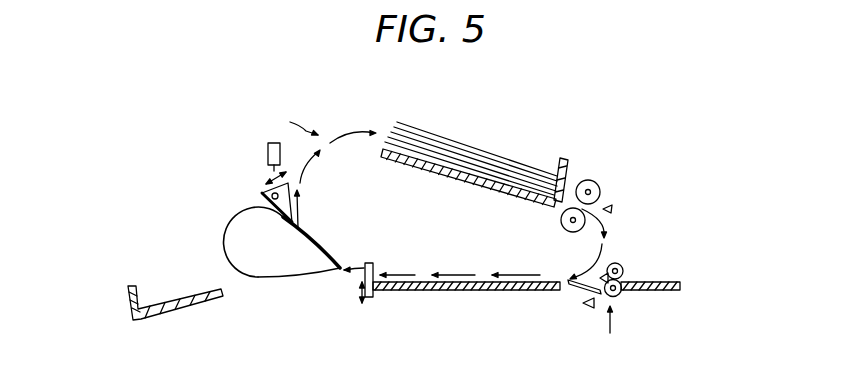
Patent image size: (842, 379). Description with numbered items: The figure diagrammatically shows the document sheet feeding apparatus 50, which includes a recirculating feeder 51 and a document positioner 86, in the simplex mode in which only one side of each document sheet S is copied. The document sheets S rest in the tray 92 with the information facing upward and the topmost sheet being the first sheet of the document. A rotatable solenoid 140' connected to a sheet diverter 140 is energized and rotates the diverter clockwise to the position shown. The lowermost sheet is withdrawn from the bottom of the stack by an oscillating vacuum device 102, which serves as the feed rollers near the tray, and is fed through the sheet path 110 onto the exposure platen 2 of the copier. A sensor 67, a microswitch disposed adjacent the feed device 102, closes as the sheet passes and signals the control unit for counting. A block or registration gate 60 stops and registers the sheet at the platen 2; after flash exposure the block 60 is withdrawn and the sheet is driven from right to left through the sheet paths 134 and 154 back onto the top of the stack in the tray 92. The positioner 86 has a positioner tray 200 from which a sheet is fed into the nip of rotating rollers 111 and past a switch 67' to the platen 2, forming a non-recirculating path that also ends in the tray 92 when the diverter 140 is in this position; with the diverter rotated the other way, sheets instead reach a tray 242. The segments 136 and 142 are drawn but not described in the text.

The exposure platen 2 is at (509, 292).
The document sheet feeding apparatus 50 is at (288, 123).
The recirculating feeder 51 is at (424, 213).
The block or registration gate 60 is at (374, 266).
The sensor 67 is at (625, 206).
The switch 67' is at (626, 261).
The document positioner 86 is at (600, 327).
The tray 92 is at (571, 160).
The oscillating vacuum device 102 is at (600, 184).
The sheet path 110 is at (598, 256).
The rotating rollers 111 is at (618, 292).
The sheet path 134 is at (315, 249).
The lower web run 136 is at (306, 273).
The sheet diverter 140 is at (258, 194).
The rotatable solenoid 140' is at (251, 154).
The blade movement direction 142 is at (299, 212).
The sheet path 154 is at (318, 160).
The positioner tray 200 is at (663, 282).
The tray 242 is at (175, 317).
The document sheet S is at (480, 147).